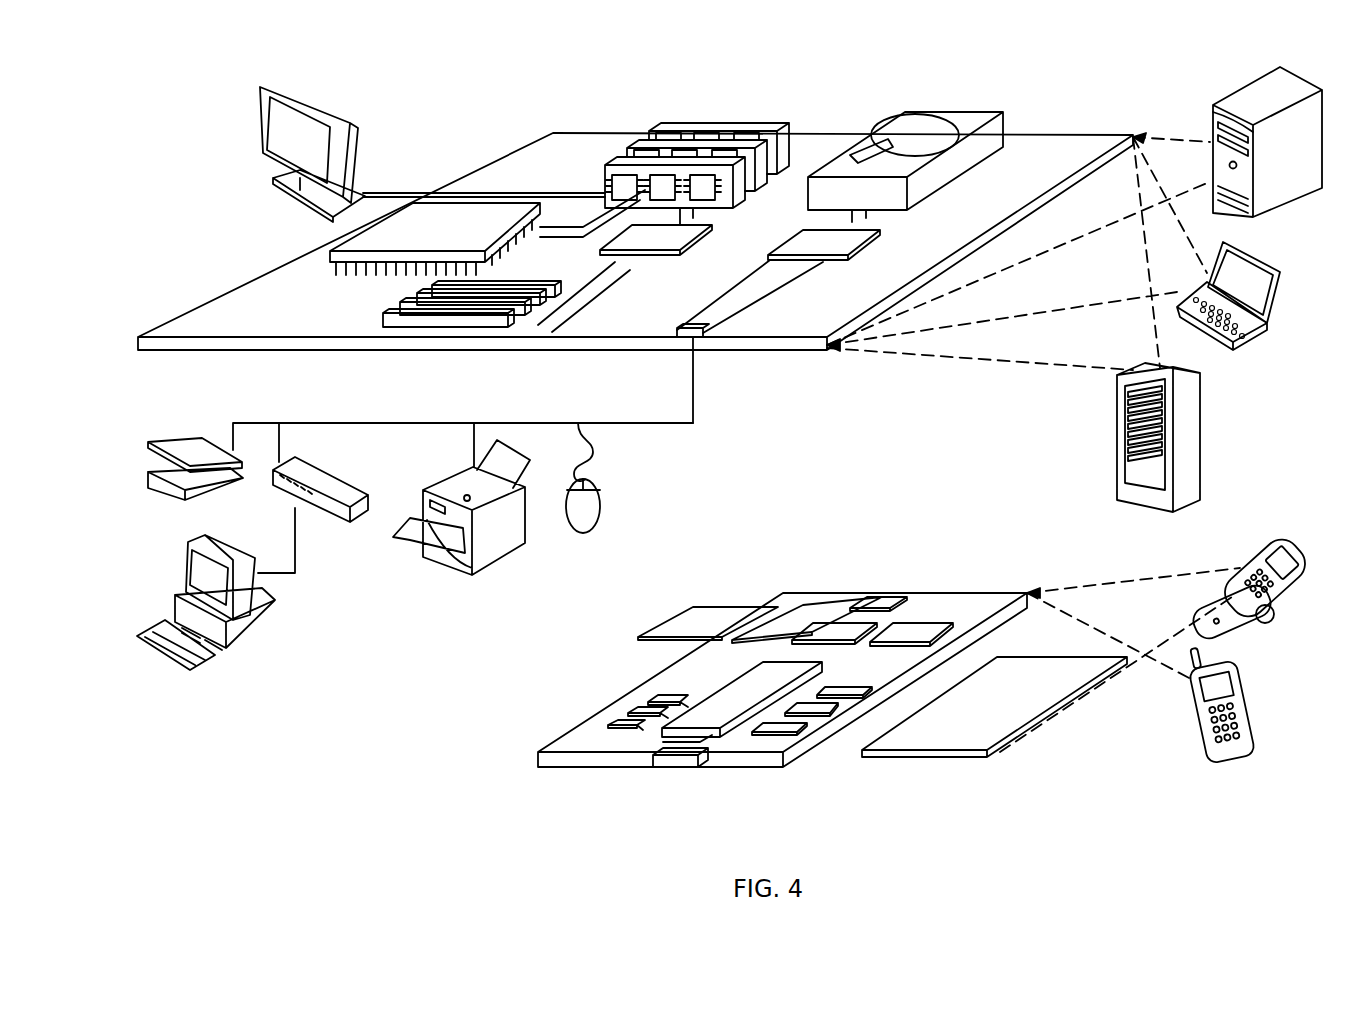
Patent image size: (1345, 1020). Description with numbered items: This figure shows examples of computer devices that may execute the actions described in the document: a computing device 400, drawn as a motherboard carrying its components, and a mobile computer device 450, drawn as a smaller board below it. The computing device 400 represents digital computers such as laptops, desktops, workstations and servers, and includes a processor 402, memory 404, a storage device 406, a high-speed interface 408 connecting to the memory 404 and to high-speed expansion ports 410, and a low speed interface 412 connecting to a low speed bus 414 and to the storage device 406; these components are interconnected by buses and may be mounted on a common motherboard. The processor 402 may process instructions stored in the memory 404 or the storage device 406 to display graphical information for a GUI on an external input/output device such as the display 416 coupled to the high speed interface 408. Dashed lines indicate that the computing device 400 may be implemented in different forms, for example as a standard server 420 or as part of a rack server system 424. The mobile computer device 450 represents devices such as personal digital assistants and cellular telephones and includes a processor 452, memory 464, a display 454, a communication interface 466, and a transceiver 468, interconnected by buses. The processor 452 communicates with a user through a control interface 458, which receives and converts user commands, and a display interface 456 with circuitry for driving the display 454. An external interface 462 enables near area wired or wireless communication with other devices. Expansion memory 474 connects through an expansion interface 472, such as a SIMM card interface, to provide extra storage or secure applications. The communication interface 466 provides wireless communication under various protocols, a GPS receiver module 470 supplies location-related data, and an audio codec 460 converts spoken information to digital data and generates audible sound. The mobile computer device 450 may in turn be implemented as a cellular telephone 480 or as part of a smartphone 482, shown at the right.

The computing device 400 is at (456, 108).
The processor 402 is at (330, 252).
The memory 404 is at (665, 130).
The storage device 406 is at (880, 126).
The high-speed interface 408 is at (633, 240).
The high-speed expansion ports 410 is at (398, 310).
The low speed interface 412 is at (807, 238).
The low speed bus 414 is at (707, 342).
The display 416 is at (268, 86).
The standard server 420 is at (1213, 130).
The rack server system 424 is at (1117, 472).
The mobile computer device 450 is at (518, 762).
The processor 452 is at (715, 722).
The display 454 is at (952, 740).
The display interface 456 is at (780, 730).
The control interface 458 is at (815, 710).
The audio codec 460 is at (842, 688).
The external interface 462 is at (682, 760).
The memory 464 is at (630, 714).
The communication interface 466 is at (836, 630).
The transceiver 468 is at (913, 632).
The GPS receiver module 470 is at (888, 597).
The expansion interface 472 is at (765, 608).
The expansion memory 474 is at (695, 608).
The cellular telephone 480 is at (1250, 550).
The smartphone 482 is at (1197, 714).